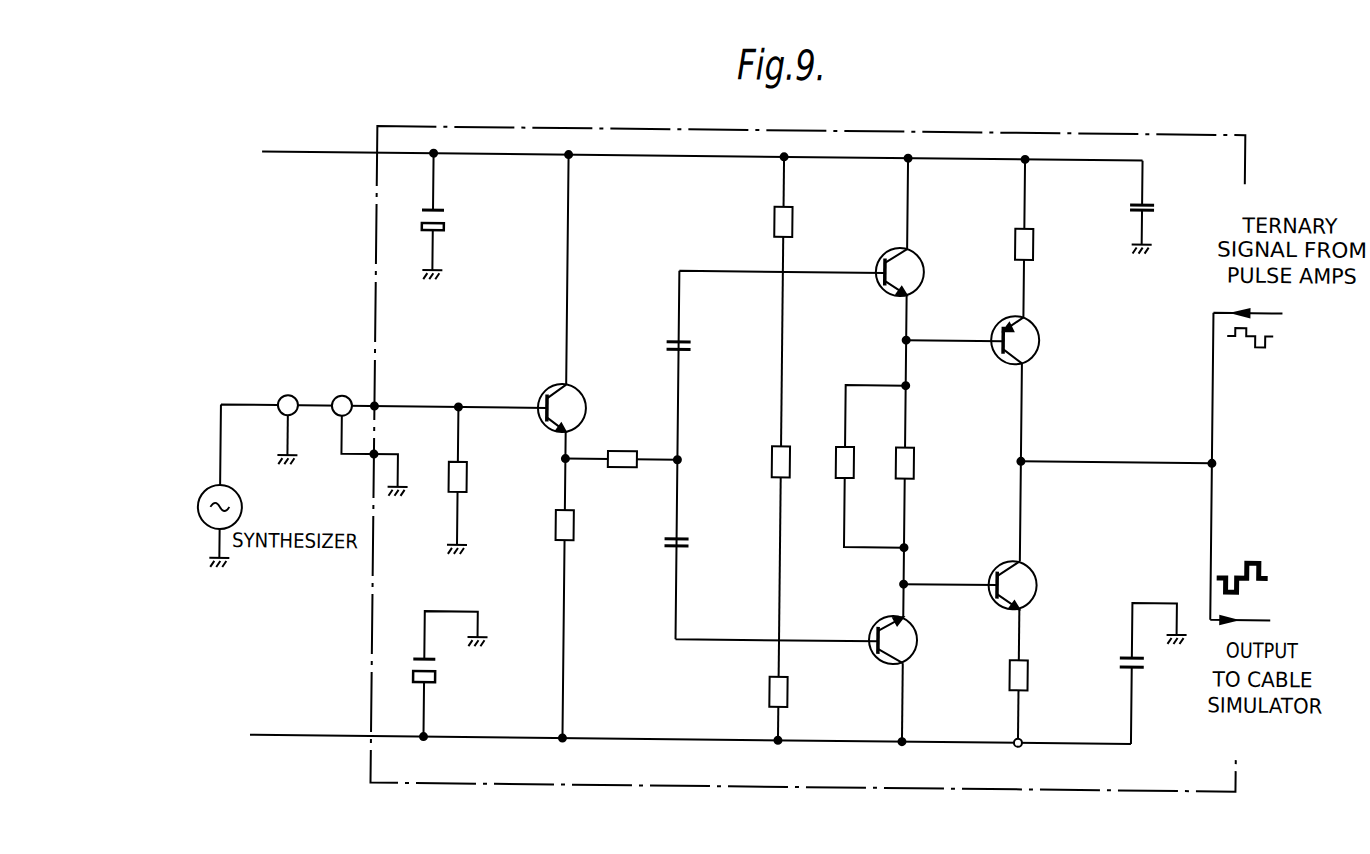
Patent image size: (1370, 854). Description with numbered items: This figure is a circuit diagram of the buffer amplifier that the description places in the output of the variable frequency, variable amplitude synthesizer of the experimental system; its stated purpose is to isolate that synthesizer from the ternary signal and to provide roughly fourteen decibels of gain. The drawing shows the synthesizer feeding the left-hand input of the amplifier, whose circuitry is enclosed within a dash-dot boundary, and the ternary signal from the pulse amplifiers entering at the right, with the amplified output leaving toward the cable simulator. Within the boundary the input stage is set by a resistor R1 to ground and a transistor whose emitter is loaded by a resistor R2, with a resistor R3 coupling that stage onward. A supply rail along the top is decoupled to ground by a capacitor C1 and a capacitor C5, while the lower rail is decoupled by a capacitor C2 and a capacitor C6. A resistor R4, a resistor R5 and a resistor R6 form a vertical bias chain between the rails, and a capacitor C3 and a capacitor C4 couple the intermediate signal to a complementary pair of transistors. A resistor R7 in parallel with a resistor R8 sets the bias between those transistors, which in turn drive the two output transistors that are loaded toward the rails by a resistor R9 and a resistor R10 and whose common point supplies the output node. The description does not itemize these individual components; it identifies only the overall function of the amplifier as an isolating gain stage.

The resistor R1 is at (474, 478).
The resistor R2 is at (584, 525).
The resistor R3 is at (623, 446).
The resistor R4 is at (802, 222).
The resistor R5 is at (767, 461).
The resistor R6 is at (794, 692).
The resistor R7 is at (858, 466).
The resistor R8 is at (893, 462).
The resistor R9 is at (1045, 245).
The resistor R10 is at (1043, 675).
The capacitor C1 is at (450, 215).
The capacitor C2 is at (449, 676).
The capacitor C3 is at (699, 348).
The capacitor C4 is at (695, 544).
The capacitor C5 is at (1165, 207).
The capacitor C6 is at (1153, 674).